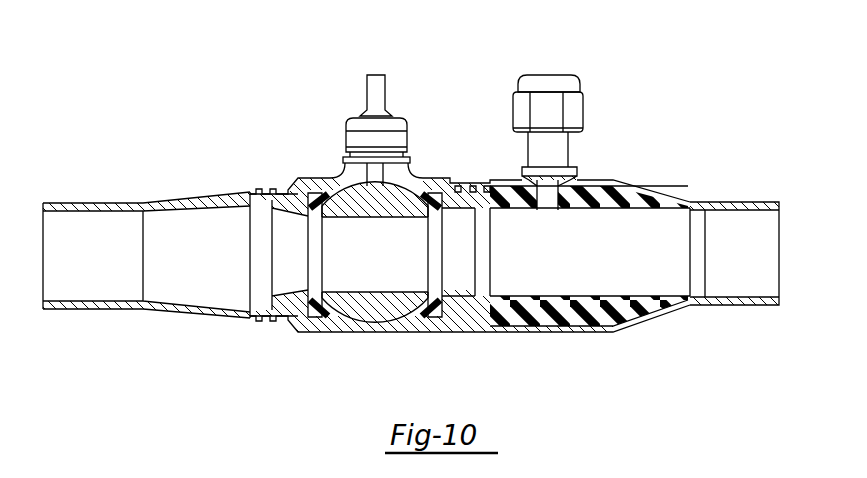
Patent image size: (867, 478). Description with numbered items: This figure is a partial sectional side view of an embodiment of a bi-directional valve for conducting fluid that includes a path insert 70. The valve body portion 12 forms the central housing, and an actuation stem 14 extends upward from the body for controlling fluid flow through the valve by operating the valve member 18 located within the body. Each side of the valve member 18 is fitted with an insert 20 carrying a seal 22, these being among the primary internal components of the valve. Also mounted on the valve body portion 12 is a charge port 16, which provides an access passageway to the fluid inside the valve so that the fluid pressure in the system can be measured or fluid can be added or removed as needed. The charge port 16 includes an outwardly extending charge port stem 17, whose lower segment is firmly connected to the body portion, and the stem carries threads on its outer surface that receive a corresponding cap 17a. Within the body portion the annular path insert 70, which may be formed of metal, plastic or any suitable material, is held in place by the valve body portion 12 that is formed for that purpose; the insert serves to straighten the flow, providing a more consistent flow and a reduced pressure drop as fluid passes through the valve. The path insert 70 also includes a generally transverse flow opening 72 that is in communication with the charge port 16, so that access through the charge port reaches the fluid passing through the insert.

The valve body portion 12 is at (182, 196).
The actuation stem 14 is at (386, 92).
The charge port 16 is at (562, 123).
The charge port stem 17 is at (562, 147).
The cap 17a is at (561, 102).
The valve member 18 is at (379, 318).
The insert 20 is at (275, 192).
The seal 22 is at (318, 196).
The path insert 70 is at (645, 195).
The transverse flow opening 72 is at (549, 205).